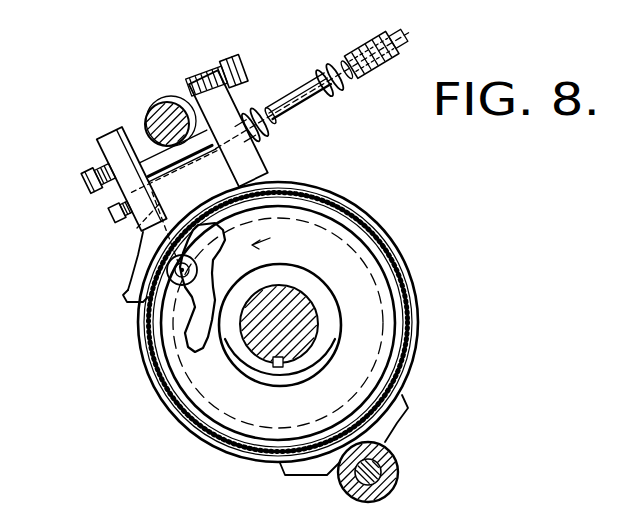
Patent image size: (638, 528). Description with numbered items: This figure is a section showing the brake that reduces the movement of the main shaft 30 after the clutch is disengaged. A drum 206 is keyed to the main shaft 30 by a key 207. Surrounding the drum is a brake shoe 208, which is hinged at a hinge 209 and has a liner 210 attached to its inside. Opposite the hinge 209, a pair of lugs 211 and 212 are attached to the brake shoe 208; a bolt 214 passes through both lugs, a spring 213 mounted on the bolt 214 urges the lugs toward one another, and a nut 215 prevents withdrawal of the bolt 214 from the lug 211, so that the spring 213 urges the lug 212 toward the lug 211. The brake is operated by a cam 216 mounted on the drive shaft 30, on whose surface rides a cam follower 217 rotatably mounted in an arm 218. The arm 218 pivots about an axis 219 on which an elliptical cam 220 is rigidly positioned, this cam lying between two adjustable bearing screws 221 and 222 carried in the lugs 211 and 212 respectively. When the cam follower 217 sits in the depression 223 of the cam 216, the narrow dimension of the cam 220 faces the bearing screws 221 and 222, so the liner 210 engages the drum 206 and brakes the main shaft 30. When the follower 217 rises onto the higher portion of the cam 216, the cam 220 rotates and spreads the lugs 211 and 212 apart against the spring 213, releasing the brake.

The main shaft 30 is at (294, 295).
The drum 206 is at (408, 311).
The key 207 is at (277, 367).
The brake shoe 208 is at (372, 216).
The hinge 209 is at (386, 472).
The liner 210 is at (412, 351).
The lug 211 is at (112, 137).
The lug 212 is at (331, 187).
The spring 213 is at (270, 104).
The bolt 214 is at (396, 41).
The nut 215 is at (108, 209).
The cam 216 is at (162, 366).
The cam follower 217 is at (126, 296).
The arm 218 is at (143, 237).
The axis 219 is at (147, 116).
The elliptical cam 220 is at (188, 102).
The adjustable bearing screw 221 is at (85, 184).
The adjustable bearing screw 222 is at (240, 62).
The depression 223 is at (172, 302).